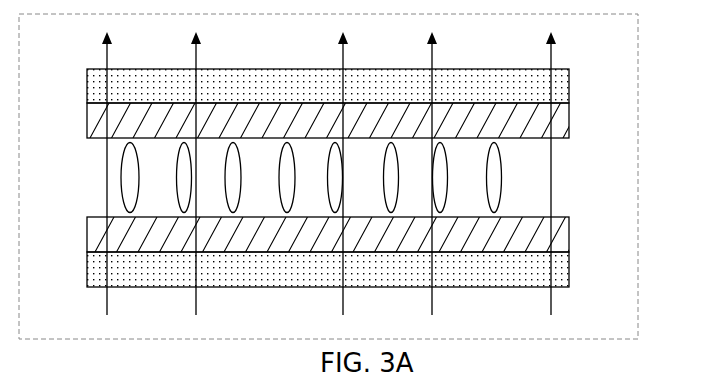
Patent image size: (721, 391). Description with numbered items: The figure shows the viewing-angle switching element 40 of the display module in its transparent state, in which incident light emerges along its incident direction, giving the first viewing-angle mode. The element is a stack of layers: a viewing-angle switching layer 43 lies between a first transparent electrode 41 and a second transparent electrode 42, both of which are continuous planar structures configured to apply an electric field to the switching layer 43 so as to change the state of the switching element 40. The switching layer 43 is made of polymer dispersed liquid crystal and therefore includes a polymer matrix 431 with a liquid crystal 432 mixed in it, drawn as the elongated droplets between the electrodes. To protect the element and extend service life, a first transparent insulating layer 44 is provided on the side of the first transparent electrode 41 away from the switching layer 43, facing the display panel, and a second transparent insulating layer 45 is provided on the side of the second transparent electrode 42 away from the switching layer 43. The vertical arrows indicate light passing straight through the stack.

The viewing-angle switching element 40 is at (638, 130).
The first transparent electrode 41 is at (355, 120).
The second transparent electrode 42 is at (373, 243).
The viewing-angle switching layer 43 is at (262, 158).
The polymer matrix 431 is at (203, 205).
The liquid crystal 432 is at (128, 205).
The first transparent insulating layer 44 is at (445, 97).
The second transparent insulating layer 45 is at (475, 262).